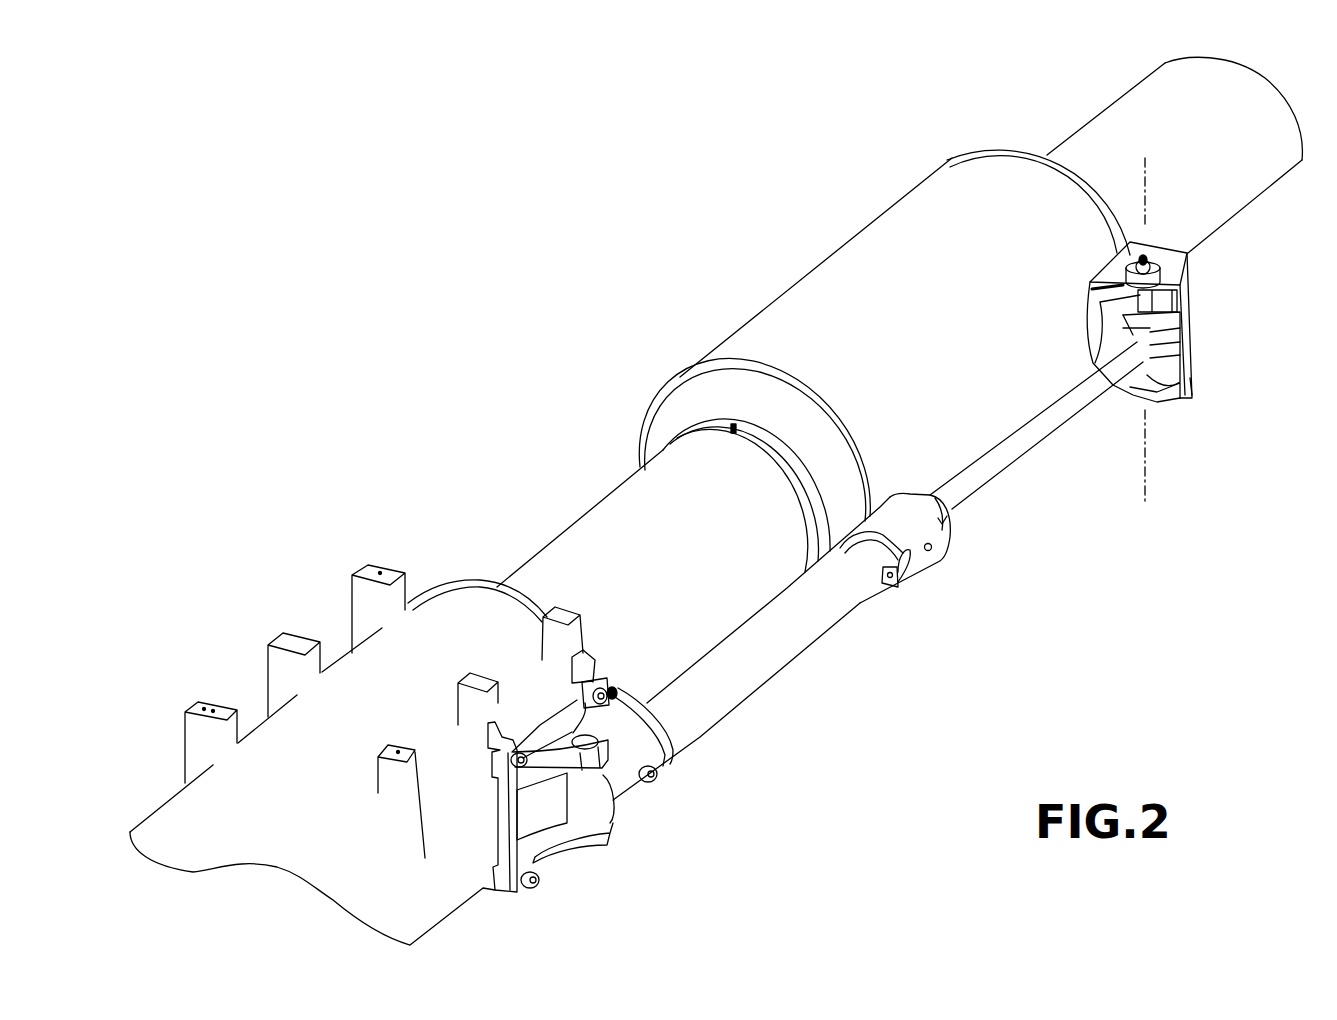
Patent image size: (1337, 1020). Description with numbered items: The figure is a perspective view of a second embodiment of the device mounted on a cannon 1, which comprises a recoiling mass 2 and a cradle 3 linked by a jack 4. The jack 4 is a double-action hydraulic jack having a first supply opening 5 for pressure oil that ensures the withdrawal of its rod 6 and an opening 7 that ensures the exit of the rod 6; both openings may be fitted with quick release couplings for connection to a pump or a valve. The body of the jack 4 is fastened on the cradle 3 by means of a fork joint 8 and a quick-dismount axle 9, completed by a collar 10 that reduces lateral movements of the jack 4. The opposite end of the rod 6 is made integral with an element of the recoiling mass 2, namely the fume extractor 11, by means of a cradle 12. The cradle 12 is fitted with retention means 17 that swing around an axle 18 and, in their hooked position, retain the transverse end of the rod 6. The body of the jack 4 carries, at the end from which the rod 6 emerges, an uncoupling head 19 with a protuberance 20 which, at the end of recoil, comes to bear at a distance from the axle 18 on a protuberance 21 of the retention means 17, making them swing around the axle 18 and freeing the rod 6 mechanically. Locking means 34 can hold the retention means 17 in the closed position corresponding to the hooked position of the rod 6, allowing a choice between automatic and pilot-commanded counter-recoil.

The cannon 1 is at (432, 220).
The recoiling mass 2 is at (559, 486).
The cradle 3 is at (219, 630).
The jack 4 is at (783, 672).
The first supply opening 5 is at (898, 588).
The rod 6 is at (1032, 452).
The opening 7 is at (660, 777).
The fork joint 8 is at (497, 823).
The quick-dismount axle 9 is at (567, 717).
The collar 10 is at (680, 737).
The fume extractor 11 is at (837, 250).
The cradle 12 is at (1195, 285).
The retention means 17 is at (1157, 330).
The axle 18 is at (1147, 163).
The uncoupling head 19 is at (933, 558).
The protuberance 20 is at (955, 525).
The protuberance 21 is at (1163, 357).
The locking means 34 is at (1153, 260).